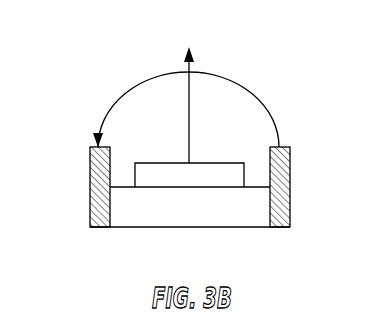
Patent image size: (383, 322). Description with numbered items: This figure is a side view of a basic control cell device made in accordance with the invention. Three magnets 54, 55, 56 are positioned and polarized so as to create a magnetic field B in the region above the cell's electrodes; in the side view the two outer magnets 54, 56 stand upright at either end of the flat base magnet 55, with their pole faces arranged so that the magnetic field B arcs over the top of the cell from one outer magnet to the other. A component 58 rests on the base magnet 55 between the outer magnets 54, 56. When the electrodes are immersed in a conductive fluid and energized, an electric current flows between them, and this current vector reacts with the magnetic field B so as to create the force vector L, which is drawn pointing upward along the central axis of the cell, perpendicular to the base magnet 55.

The magnet 54 is at (90, 168).
The magnet 55 is at (178, 227).
The magnet 56 is at (290, 195).
The sensor element 58 is at (190, 145).
The magnetic field B is at (227, 77).
The force vector L is at (188, 91).